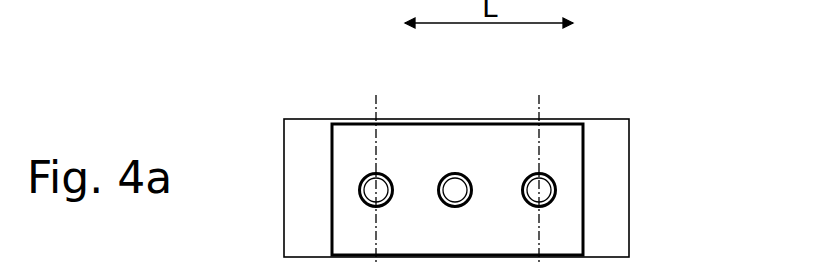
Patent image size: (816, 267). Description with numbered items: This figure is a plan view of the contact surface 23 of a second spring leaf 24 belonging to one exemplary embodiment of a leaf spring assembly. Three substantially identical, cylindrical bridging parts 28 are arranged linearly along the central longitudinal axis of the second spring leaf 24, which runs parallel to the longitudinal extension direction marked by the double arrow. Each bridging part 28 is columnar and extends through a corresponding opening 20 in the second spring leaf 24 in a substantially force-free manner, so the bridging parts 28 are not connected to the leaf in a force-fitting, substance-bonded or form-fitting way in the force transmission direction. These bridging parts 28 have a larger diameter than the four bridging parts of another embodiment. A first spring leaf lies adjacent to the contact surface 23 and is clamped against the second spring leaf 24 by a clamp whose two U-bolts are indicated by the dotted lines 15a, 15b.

The dotted line 15a is at (375, 105).
The dotted line 15b is at (541, 105).
The opening 20 is at (557, 193).
The contact surface 23 is at (332, 145).
The second spring leaf 24 is at (615, 139).
The bridging part 28 is at (368, 187).